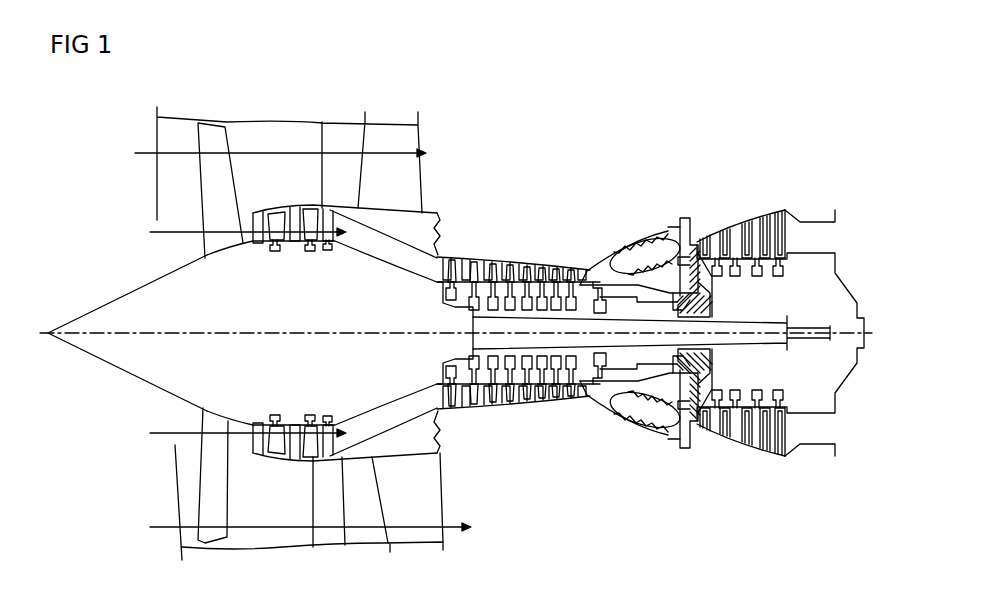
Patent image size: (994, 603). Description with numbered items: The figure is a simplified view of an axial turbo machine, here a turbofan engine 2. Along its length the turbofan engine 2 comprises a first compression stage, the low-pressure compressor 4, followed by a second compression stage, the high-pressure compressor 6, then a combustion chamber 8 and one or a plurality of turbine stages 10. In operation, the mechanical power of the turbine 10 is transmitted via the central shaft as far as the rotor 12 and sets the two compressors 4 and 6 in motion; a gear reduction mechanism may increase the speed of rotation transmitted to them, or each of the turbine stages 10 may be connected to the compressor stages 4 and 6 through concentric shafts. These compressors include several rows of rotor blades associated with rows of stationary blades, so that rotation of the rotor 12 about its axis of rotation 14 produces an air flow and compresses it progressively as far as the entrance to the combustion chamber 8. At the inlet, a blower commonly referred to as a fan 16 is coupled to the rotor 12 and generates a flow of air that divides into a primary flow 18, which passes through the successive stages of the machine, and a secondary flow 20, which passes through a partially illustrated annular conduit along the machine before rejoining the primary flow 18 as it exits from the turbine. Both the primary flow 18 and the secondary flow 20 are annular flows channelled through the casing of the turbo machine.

The turbofan engine 2 is at (632, 142).
The low-pressure compressor 4 is at (270, 248).
The high-pressure compressor 6 is at (485, 268).
The combustion chamber 8 is at (621, 266).
The turbine stages 10 is at (763, 230).
The rotor 12 is at (127, 368).
The axis of rotation 14 is at (303, 337).
The fan 16 is at (218, 186).
The primary flow 18 is at (234, 333).
The secondary flow 20 is at (292, 340).